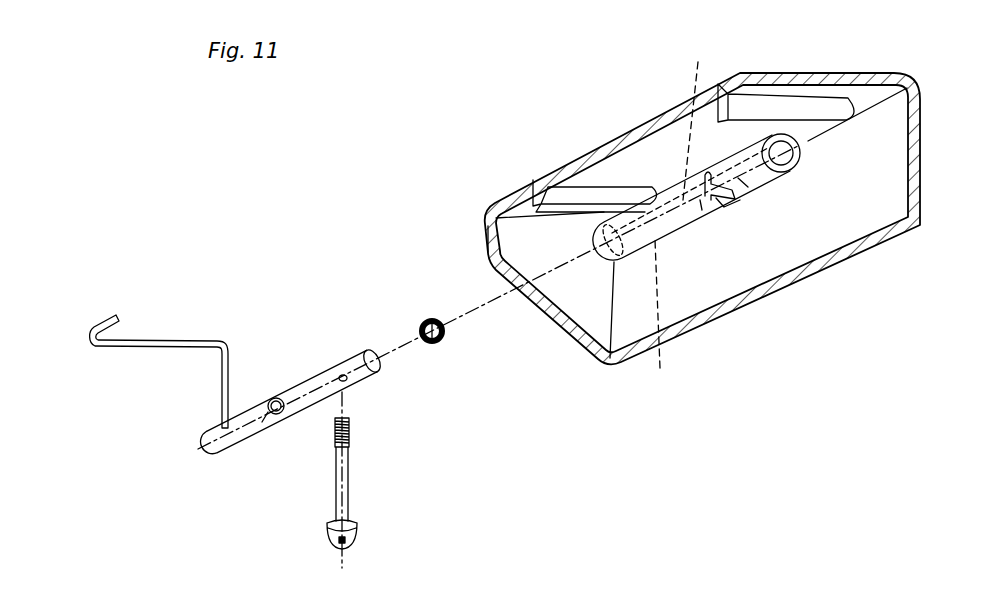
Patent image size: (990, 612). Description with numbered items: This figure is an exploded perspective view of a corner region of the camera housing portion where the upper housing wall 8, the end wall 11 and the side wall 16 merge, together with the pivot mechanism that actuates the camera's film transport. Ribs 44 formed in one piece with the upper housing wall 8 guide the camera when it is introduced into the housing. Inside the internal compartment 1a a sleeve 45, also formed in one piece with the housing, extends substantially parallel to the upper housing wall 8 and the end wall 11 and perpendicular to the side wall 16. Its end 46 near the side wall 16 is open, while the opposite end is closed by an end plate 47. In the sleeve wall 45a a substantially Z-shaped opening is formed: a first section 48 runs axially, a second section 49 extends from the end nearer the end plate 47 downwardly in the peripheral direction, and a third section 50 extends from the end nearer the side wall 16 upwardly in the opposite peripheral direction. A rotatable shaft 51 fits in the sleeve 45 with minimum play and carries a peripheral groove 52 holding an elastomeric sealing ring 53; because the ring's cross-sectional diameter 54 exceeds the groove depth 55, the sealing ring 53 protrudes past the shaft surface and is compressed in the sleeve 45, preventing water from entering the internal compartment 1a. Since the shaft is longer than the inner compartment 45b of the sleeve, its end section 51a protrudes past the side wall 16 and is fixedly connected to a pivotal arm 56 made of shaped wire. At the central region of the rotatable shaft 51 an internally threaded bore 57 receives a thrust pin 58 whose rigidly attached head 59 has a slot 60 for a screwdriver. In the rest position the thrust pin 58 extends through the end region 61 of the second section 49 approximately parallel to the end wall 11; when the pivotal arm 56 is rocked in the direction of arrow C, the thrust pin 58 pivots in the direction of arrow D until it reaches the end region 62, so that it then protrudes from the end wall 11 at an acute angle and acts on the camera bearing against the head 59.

The internal compartment 1a is at (587, 283).
The upper housing wall 8 is at (604, 148).
The end wall 11 is at (918, 156).
The side wall 16 is at (481, 228).
The ribs 44 is at (570, 193).
The sleeve 45 is at (669, 176).
The sleeve wall 45a is at (670, 319).
The inner compartment of the sleeve 45b is at (704, 119).
The end of the sleeve 46 is at (604, 240).
The end plate 47 is at (800, 158).
The first section 48 is at (723, 204).
The second section 49 is at (735, 200).
The third section 50 is at (703, 188).
The rotatable shaft 51 is at (288, 386).
The end section 51a is at (240, 452).
The peripheral groove 52 is at (275, 392).
The sealing ring 53 is at (452, 352).
The diameter 54 is at (419, 308).
The depth 55 is at (276, 416).
The pivotal arm 56 is at (155, 343).
The bore 57 is at (350, 383).
The thrust pin 58 is at (350, 470).
The head 59 is at (358, 528).
The slot 60 is at (344, 546).
The end region 61 is at (745, 196).
The end region 62 is at (712, 180).
The arrow C is at (193, 437).
The arrow D is at (757, 175).